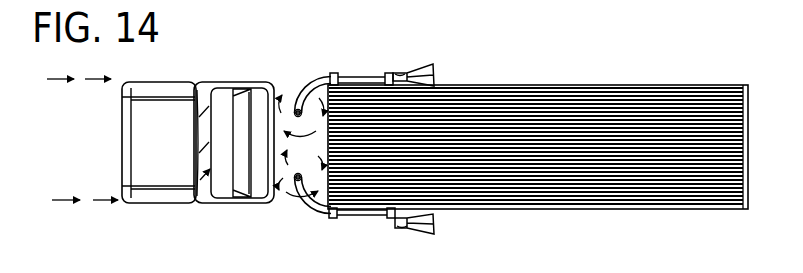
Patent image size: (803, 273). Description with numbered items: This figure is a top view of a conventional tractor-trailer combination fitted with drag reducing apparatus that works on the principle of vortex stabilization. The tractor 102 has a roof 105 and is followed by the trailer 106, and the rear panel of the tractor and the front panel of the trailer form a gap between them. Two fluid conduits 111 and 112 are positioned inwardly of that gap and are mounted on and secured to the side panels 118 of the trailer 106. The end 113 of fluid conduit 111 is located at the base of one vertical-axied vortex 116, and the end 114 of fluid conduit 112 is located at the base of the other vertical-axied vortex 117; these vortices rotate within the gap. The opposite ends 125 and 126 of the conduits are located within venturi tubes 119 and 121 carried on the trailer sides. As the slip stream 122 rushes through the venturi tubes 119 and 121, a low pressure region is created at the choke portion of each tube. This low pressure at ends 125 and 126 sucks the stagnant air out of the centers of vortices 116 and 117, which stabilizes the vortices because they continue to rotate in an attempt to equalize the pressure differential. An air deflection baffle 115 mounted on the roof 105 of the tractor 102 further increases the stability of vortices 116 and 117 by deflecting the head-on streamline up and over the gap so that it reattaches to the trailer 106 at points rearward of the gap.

The tractor 102 is at (119, 139).
The roof 105 is at (221, 95).
The trailer 106 is at (538, 145).
The fluid conduit 111 is at (350, 76).
The fluid conduit 112 is at (352, 218).
The end of fluid conduit 113 is at (295, 113).
The end of fluid conduit 114 is at (295, 175).
The air deflection baffle 115 is at (242, 139).
The vertical-axied vortex 116 is at (298, 81).
The vertical-axied vortex 117 is at (296, 203).
The side panel 118 is at (549, 86).
The venturi tube 119 is at (424, 61).
The venturi tube 121 is at (428, 232).
The slip stream 122 is at (68, 140).
The end of fluid conduit 125 is at (402, 74).
The end of fluid conduit 126 is at (401, 232).